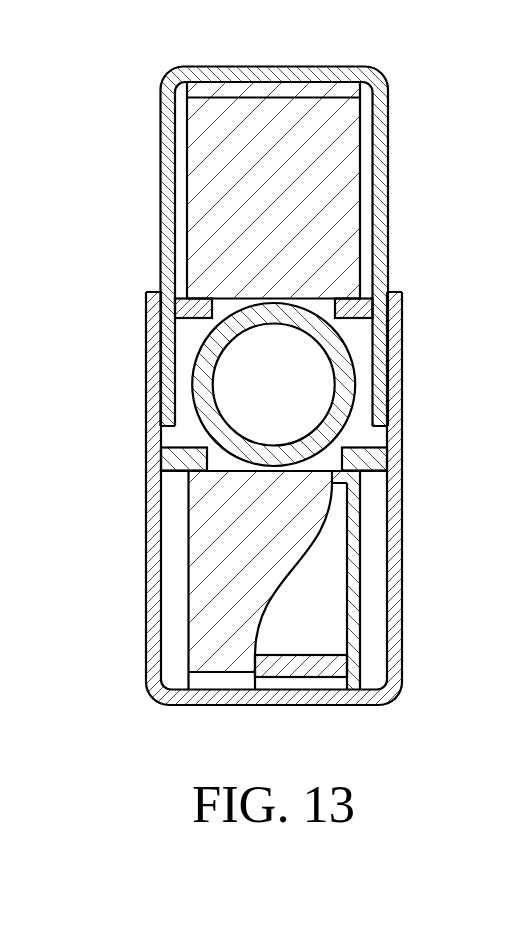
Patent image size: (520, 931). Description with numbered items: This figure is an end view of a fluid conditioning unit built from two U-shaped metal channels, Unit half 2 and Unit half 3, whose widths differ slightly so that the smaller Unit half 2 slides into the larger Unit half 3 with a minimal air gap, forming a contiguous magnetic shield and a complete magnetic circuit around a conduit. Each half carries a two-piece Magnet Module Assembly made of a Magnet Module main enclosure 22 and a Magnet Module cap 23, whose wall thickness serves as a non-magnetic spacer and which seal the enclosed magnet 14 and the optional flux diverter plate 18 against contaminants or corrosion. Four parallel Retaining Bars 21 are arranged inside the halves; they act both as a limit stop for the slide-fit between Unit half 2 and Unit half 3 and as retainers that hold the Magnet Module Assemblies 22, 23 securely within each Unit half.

The Unit half 2 is at (387, 202).
The Unit half 3 is at (145, 382).
The magnet 14 is at (322, 588).
The flux diverter plate 18 is at (315, 665).
The Retaining Bar 21 is at (195, 322).
The Magnet Module main enclosure 22 is at (362, 158).
The Magnet Module cap 23 is at (288, 92).